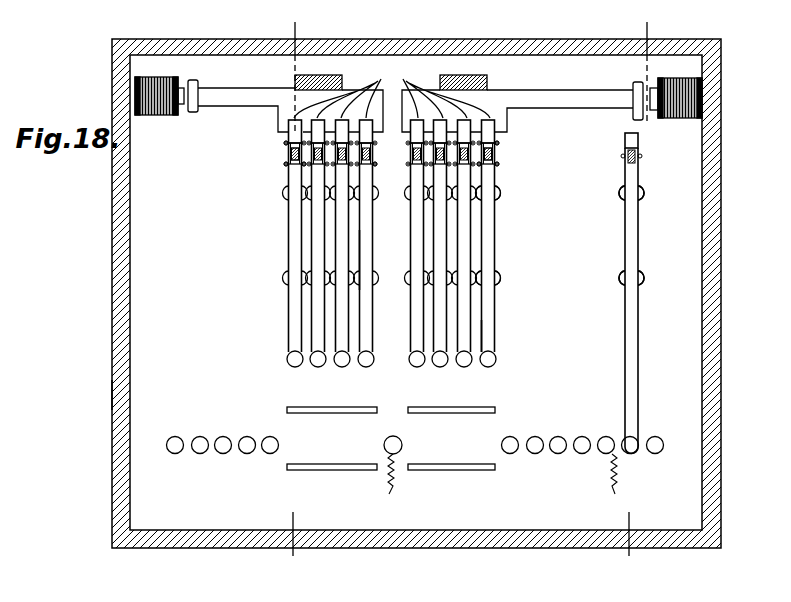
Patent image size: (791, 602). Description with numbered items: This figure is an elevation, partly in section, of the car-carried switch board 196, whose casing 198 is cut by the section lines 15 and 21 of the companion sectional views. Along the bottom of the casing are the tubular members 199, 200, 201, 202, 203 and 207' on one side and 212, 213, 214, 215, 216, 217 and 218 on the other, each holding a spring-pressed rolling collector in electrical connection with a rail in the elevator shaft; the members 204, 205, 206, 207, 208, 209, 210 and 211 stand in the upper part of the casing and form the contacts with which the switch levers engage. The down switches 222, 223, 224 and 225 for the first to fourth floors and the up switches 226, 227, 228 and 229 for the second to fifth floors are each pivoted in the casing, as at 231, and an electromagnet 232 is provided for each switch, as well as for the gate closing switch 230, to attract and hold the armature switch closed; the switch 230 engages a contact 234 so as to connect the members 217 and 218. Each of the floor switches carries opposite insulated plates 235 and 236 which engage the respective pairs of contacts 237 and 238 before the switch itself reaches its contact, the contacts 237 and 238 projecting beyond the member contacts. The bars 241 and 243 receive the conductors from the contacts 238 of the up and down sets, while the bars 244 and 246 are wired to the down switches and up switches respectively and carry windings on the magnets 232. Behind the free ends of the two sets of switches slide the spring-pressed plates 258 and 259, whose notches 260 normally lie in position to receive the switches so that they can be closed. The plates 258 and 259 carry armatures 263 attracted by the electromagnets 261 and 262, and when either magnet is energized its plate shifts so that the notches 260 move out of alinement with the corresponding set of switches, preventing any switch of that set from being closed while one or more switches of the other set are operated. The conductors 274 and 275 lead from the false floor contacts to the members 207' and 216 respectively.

The section line 15— 15 is at (294, 297).
The section line 21— 21 is at (638, 297).
The switch board 196 is at (111, 258).
The casing 198 is at (112, 395).
The tubular member 199 is at (171, 452).
The tubular member 200 is at (200, 453).
The tubular member 201 is at (223, 437).
The tubular member 202 is at (248, 453).
The tubular member 203 is at (270, 437).
The tubular member 204 is at (288, 200).
The tubular member 205 is at (310, 200).
The tubular member 206 is at (352, 198).
The tubular member 207 is at (382, 236).
The tubular member 207' is at (386, 436).
The tubular member 208 is at (362, 264).
The tubular member 209 is at (448, 200).
The tubular member 210 is at (472, 200).
The tubular member 211 is at (497, 196).
The tubular member 212 is at (510, 454).
The tubular member 213 is at (535, 437).
The tubular member 214 is at (558, 454).
The tubular member 215 is at (583, 454).
The tubular member 216 is at (605, 437).
The tubular member 217 is at (638, 440).
The tubular member 218 is at (655, 454).
The down switch 222 is at (294, 366).
The down switch 223 is at (318, 366).
The down switch 224 is at (346, 366).
The down switch 225 is at (370, 333).
The up switch 226 is at (419, 366).
The up switch 227 is at (443, 366).
The up switch 228 is at (468, 366).
The up switch 229 is at (495, 354).
The gate closing switch 230 is at (640, 356).
The pivot 231 is at (497, 364).
The electromagnet 232 is at (497, 278).
The contact 234 is at (640, 193).
The insulated plate 235 is at (287, 165).
The insulated plate 236 is at (303, 167).
The contacts 237 is at (292, 151).
The contacts 238 is at (285, 143).
The bar 241 is at (456, 413).
The bar 243 is at (313, 413).
The bar 244 is at (332, 470).
The bar 246 is at (455, 470).
The locking plate 258 is at (236, 106).
The locking plate 259 is at (575, 108).
The notches 260 is at (392, 93).
The electromagnet 261 is at (148, 117).
The electromagnet 262 is at (688, 119).
The armature 263 is at (634, 113).
The conductor 274 is at (389, 497).
The conductor 275 is at (615, 496).